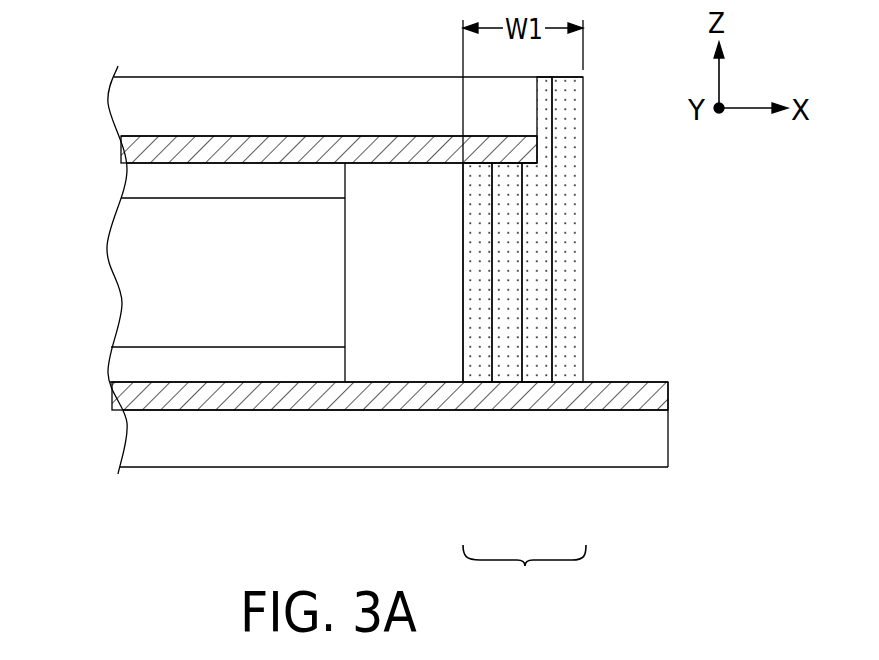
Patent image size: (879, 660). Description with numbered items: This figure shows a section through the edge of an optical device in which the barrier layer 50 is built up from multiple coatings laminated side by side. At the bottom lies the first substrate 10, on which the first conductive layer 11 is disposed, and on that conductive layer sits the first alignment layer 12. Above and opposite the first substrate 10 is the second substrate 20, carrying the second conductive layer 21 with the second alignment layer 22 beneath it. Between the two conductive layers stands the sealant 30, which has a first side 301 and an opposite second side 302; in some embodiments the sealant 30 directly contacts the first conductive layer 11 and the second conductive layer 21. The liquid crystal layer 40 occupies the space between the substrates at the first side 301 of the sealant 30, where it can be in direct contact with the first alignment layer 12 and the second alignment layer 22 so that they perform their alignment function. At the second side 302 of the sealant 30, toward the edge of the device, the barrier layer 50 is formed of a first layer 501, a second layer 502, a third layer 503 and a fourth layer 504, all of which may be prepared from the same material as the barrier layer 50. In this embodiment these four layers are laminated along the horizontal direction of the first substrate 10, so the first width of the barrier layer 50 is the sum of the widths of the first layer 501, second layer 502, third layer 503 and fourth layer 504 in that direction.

The first substrate 10 is at (131, 437).
The first conductive layer 11 is at (126, 397).
The first alignment layer 12 is at (120, 362).
The second substrate 20 is at (124, 107).
The second conductive layer 21 is at (128, 146).
The second alignment layer 22 is at (128, 181).
The sealant 30 is at (358, 292).
The first side 301 is at (345, 258).
The second side 302 is at (463, 250).
The liquid crystal layer 40 is at (120, 275).
The barrier layer 50 is at (524, 573).
The first layer 501 is at (478, 372).
The second layer 502 is at (505, 372).
The third layer 503 is at (535, 372).
The fourth layer 504 is at (567, 372).